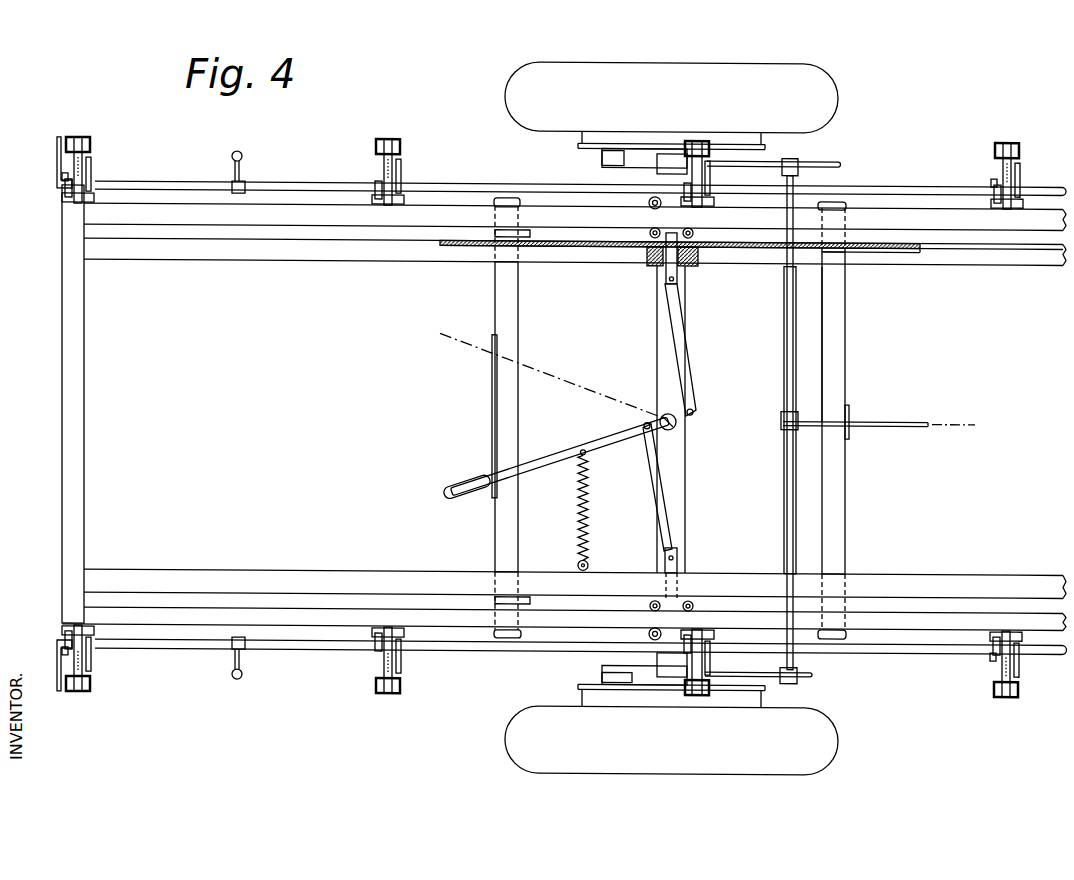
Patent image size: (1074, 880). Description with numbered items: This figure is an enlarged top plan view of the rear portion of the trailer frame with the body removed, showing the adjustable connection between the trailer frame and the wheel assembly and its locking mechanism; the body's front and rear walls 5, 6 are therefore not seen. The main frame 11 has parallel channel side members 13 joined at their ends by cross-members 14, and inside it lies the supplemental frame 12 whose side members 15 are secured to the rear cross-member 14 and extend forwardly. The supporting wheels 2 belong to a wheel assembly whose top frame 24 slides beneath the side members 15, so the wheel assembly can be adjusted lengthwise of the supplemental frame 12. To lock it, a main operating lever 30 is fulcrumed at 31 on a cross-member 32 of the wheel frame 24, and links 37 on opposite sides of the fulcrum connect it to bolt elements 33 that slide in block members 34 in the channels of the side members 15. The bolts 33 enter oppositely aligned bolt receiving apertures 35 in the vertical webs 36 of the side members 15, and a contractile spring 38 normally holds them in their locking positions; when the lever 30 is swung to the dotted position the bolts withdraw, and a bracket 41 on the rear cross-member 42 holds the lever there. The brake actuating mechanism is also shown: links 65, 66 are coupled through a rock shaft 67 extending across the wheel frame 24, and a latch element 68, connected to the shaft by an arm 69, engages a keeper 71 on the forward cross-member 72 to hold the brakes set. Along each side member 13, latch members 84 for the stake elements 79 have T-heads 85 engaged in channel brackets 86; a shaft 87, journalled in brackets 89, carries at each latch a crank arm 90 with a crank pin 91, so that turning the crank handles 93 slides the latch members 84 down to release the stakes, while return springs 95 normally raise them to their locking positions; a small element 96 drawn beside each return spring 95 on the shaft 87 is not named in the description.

The supporting wheels 2 is at (505, 88).
The front wall 5 is at (735, 38).
The rear wall 6 is at (483, 418).
The main frame 11 is at (303, 204).
The supplemental frame 12 is at (272, 263).
The side members 13 is at (452, 216).
The cross-members 14 is at (90, 435).
The side members 15 is at (905, 262).
The top frame 24 is at (848, 518).
The main operating lever 30 is at (560, 377).
The fulcrum 31 is at (680, 428).
The cross-member 32 is at (657, 356).
The bolt elements 33 is at (664, 273).
The block members 34 is at (702, 255).
The bolt receiving apertures 35 is at (675, 235).
The vertical webs 36 is at (875, 262).
The links 37 is at (692, 374).
The contractile spring 38 is at (580, 525).
The bracket 41 is at (492, 380).
The cross-member 42 is at (494, 300).
The link 65 is at (737, 150).
The link 66 is at (800, 165).
The rock shaft 67 is at (783, 358).
The latch element 68 is at (888, 425).
The arm 69 is at (781, 419).
The keeper 71 is at (850, 400).
The forward cross-member 72 is at (848, 362).
The stake element 79 is at (91, 150).
The latch member 84 is at (79, 140).
The T-head 85 is at (78, 205).
The channel bracket 86 is at (65, 192).
The shaft 87 is at (155, 184).
The brackets 89 is at (62, 180).
The crank arm 90 is at (92, 170).
The crank pin 91 is at (1002, 176).
The crank handles 93 is at (57, 152).
The return springs 95 is at (242, 156).
The pin 96 is at (246, 182).